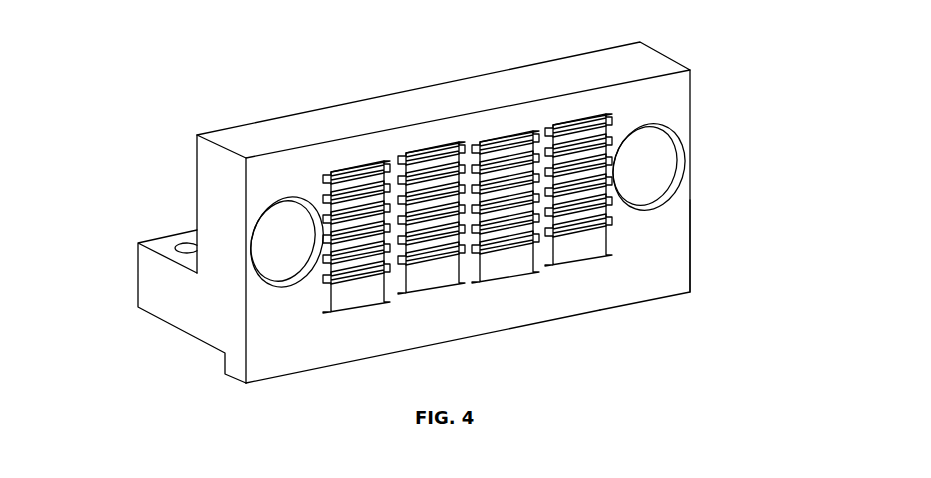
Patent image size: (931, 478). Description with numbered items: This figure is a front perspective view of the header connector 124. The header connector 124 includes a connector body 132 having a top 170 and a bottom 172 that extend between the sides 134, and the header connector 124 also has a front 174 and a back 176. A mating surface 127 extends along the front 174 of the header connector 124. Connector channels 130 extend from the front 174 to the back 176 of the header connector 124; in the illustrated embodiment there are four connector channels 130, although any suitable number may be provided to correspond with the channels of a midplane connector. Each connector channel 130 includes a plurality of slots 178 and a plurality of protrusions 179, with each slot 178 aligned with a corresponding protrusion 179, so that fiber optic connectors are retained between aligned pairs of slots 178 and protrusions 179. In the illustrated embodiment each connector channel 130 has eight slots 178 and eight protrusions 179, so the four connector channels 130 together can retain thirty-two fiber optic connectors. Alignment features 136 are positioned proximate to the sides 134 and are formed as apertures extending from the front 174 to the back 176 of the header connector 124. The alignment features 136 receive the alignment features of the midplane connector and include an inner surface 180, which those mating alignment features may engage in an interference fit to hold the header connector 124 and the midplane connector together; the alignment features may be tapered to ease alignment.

The header connector 124 is at (222, 48).
The top 170 is at (422, 60).
The back 176 is at (298, 100).
The mating surface 127 is at (665, 97).
The front 174 is at (695, 273).
The bottom 172 is at (473, 355).
The connector body 132 is at (237, 137).
The sides 134 is at (175, 352).
The alignment features 136 is at (295, 210).
The inner surface 180 is at (262, 224).
The connector channels 130 is at (478, 143).
The slots 178 is at (547, 133).
The protrusions 179 is at (593, 117).